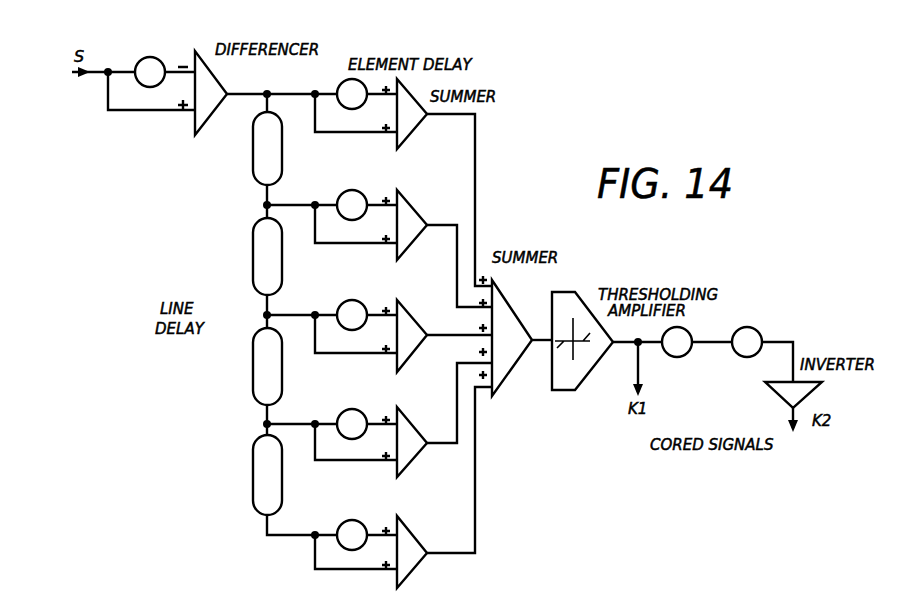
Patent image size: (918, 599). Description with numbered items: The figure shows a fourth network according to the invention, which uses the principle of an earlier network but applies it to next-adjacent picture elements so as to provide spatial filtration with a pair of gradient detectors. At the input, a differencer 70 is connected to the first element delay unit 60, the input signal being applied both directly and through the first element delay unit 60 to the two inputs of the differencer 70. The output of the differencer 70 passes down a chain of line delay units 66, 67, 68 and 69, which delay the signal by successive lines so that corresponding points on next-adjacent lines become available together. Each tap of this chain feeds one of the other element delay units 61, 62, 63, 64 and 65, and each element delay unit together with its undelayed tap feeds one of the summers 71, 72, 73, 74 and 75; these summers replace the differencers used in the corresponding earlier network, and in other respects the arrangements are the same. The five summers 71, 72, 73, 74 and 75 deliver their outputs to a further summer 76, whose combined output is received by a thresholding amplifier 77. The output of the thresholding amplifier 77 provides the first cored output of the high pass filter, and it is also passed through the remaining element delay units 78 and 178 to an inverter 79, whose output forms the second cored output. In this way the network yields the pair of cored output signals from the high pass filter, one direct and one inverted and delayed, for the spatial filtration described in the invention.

The first element delay unit 60 is at (155, 57).
The element delay unit 61 is at (340, 84).
The element delay unit 62 is at (341, 193).
The element delay unit 63 is at (341, 303).
The element delay unit 64 is at (341, 413).
The element delay unit 65 is at (341, 521).
The line delay unit 66 is at (253, 150).
The line delay unit 67 is at (253, 255).
The line delay unit 68 is at (253, 378).
The line delay unit 69 is at (254, 486).
The differencer 70 is at (196, 50).
The summer 71 is at (412, 130).
The summer 72 is at (415, 240).
The summer 73 is at (415, 350).
The summer 74 is at (415, 459).
The summer 75 is at (417, 570).
The summer 76 is at (497, 390).
The thresholding amplifier 77 is at (585, 378).
The element delay unit 78 is at (680, 357).
The element delay unit 178 is at (765, 327).
The inverter 79 is at (782, 395).